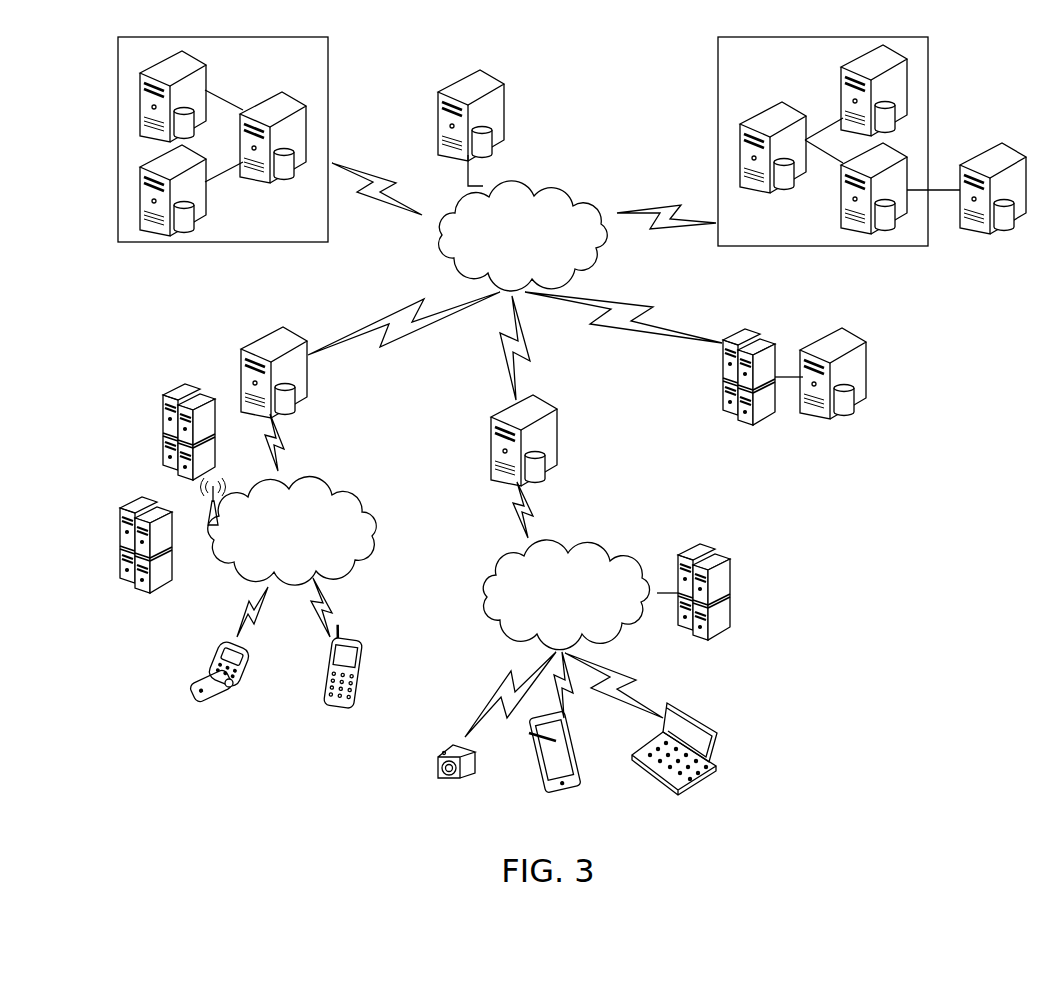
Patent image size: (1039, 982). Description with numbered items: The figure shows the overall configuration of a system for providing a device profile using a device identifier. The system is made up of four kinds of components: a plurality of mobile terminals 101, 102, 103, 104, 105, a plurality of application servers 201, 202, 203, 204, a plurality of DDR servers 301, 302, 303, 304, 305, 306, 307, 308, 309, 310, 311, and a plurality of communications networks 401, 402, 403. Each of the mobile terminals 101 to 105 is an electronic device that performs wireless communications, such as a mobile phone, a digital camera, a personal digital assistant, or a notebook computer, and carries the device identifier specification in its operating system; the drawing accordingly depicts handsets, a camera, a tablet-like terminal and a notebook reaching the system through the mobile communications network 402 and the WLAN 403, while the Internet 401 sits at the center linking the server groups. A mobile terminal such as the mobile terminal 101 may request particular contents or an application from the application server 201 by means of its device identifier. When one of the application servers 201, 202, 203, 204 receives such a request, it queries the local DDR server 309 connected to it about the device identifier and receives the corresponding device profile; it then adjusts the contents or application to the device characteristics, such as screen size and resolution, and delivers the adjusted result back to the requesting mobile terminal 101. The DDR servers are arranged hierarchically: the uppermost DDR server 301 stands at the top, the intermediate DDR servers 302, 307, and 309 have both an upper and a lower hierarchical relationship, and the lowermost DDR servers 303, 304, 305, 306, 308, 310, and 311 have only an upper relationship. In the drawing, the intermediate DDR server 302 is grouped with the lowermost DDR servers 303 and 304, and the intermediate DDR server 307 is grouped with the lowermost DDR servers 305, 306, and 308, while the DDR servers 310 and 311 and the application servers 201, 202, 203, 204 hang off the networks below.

The mobile terminal 101 is at (207, 698).
The mobile terminal 102 is at (335, 713).
The mobile terminal 103 is at (453, 778).
The mobile terminal 104 is at (548, 780).
The mobile terminal 105 is at (717, 757).
The application server 201 is at (163, 412).
The application server 202 is at (120, 527).
The application server 203 is at (731, 582).
The application server 204 is at (723, 390).
The uppermost DDR server 301 is at (503, 108).
The intermediate DDR server 302 is at (290, 97).
The lowermost DDR server 303 is at (203, 76).
The lowermost DDR server 304 is at (203, 196).
The lowermost DDR server 305 is at (760, 107).
The lowermost DDR server 306 is at (855, 60).
The intermediate DDR server 307 is at (843, 210).
The lowermost DDR server 308 is at (988, 145).
The intermediate DDR server 309 is at (258, 336).
The lowermost DDR server 310 is at (557, 433).
The lowermost DDR server 311 is at (867, 369).
The communications network 401 is at (578, 182).
The communications network 402 is at (367, 493).
The communications network 403 is at (610, 538).